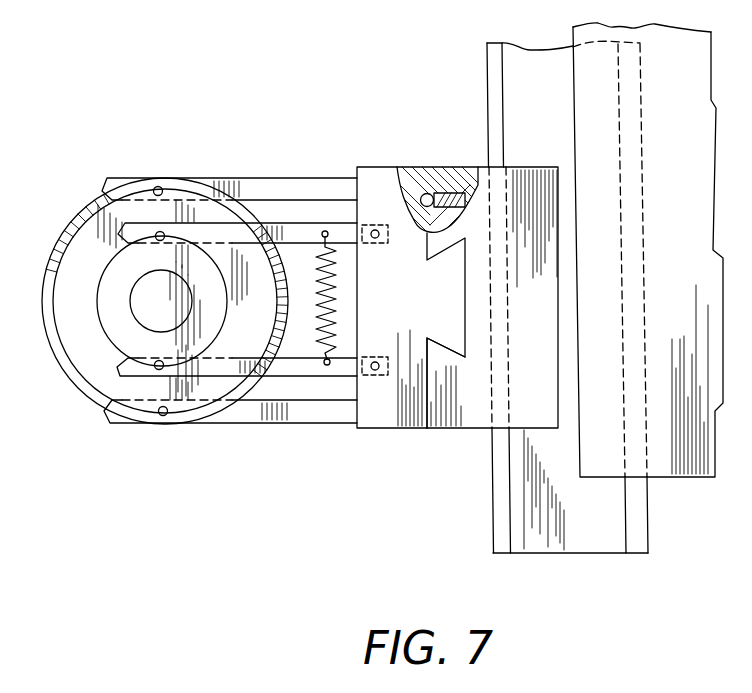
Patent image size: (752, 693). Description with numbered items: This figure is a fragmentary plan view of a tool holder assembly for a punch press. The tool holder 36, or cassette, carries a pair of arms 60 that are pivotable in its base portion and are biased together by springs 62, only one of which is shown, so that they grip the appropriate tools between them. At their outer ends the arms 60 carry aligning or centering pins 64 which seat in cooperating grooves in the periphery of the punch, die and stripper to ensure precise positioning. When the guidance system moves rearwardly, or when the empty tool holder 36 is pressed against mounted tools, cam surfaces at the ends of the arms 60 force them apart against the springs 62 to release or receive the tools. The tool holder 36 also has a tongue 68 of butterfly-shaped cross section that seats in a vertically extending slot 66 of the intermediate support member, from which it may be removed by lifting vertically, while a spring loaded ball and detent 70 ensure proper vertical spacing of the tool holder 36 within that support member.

The tool holder 36 is at (360, 430).
The arms 60 is at (297, 230).
The springs 62 is at (312, 300).
The centering pins 64 is at (161, 232).
The slot 66 is at (452, 340).
The tongue 68 is at (445, 305).
The spring loaded ball and detent 70 is at (452, 167).